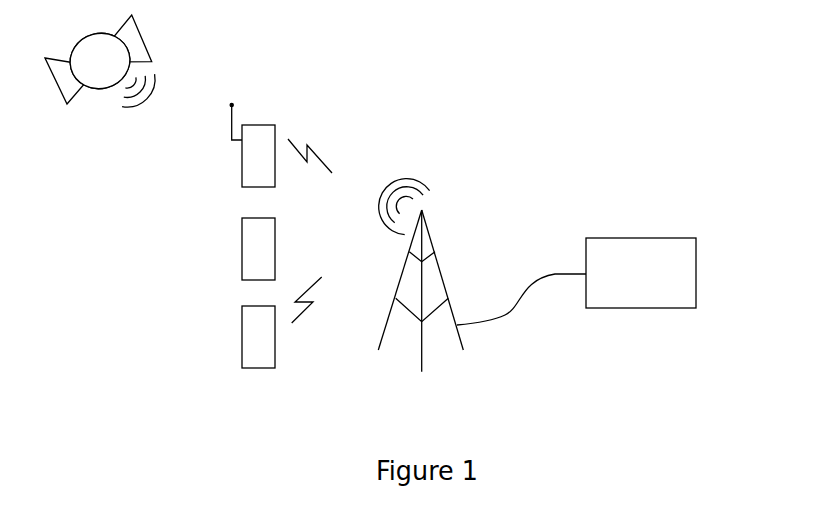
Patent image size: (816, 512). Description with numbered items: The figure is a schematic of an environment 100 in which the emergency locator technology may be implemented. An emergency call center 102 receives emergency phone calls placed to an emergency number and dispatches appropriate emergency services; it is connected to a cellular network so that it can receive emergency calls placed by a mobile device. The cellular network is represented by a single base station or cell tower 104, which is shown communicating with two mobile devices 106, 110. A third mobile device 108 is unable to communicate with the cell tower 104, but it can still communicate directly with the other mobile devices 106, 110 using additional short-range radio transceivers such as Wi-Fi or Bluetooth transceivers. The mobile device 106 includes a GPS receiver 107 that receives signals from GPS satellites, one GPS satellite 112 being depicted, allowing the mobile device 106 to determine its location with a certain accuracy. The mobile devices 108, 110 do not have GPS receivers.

The environment 100 is at (453, 116).
The emergency call center 102 is at (645, 238).
The cell tower 104 is at (422, 350).
The mobile device 106 is at (242, 157).
The GPS receiver 107 is at (233, 122).
The mobile device 108 is at (242, 249).
The mobile device 110 is at (242, 337).
The GPS satellite 112 is at (145, 38).